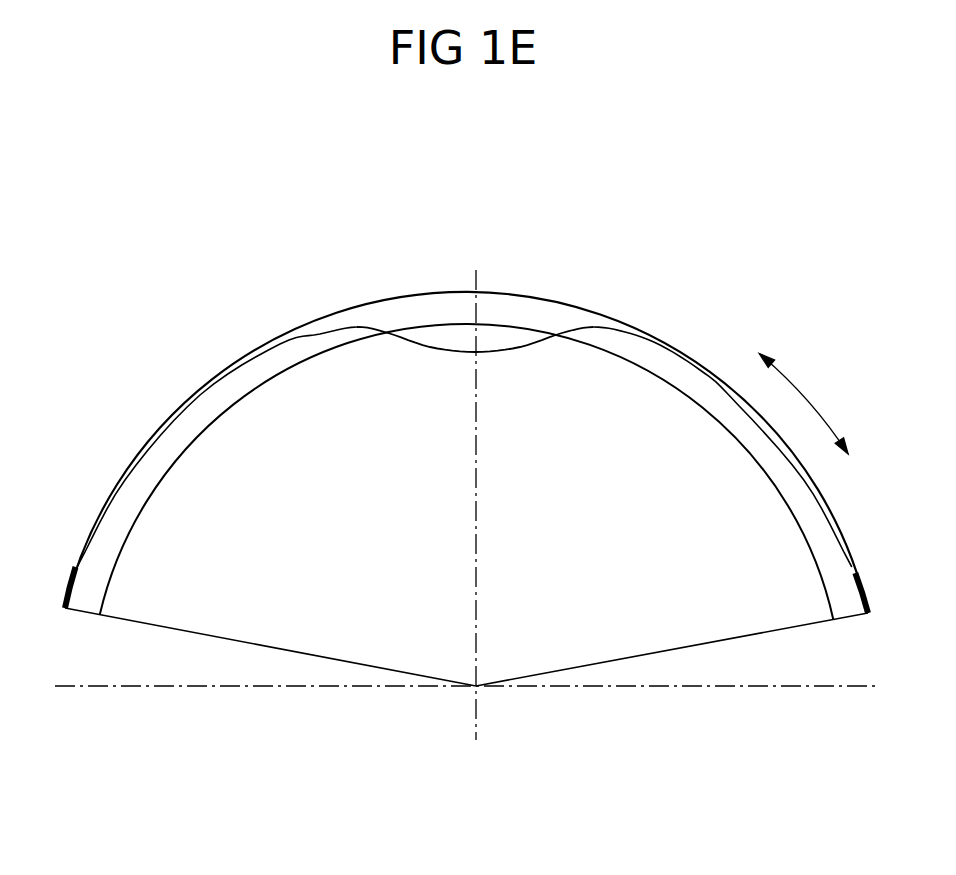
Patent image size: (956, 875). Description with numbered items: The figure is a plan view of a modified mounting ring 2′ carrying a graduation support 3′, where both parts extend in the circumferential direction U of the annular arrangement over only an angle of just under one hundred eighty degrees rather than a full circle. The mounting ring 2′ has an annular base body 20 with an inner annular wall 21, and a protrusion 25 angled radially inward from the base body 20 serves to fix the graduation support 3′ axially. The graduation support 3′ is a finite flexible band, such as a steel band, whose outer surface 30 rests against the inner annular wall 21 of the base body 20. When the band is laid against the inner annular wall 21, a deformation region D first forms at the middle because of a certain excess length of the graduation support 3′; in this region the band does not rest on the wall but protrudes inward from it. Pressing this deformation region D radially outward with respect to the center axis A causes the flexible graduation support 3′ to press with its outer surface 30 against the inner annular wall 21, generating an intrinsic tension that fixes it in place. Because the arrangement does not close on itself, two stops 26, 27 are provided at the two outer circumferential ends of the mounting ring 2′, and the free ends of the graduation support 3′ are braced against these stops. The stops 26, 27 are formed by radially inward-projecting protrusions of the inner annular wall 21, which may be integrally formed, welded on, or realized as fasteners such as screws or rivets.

The annular base body 20 is at (408, 292).
The inner annular wall 21 is at (590, 308).
The protrusion 25 is at (548, 307).
The outer surface 30 is at (425, 347).
The graduation support 3′ is at (360, 327).
The mounting ring 2′ is at (510, 312).
The stop 27 is at (77, 565).
The stop 26 is at (856, 575).
The center axis A is at (476, 686).
The deformation region D is at (466, 357).
The circumferential direction U is at (803, 404).